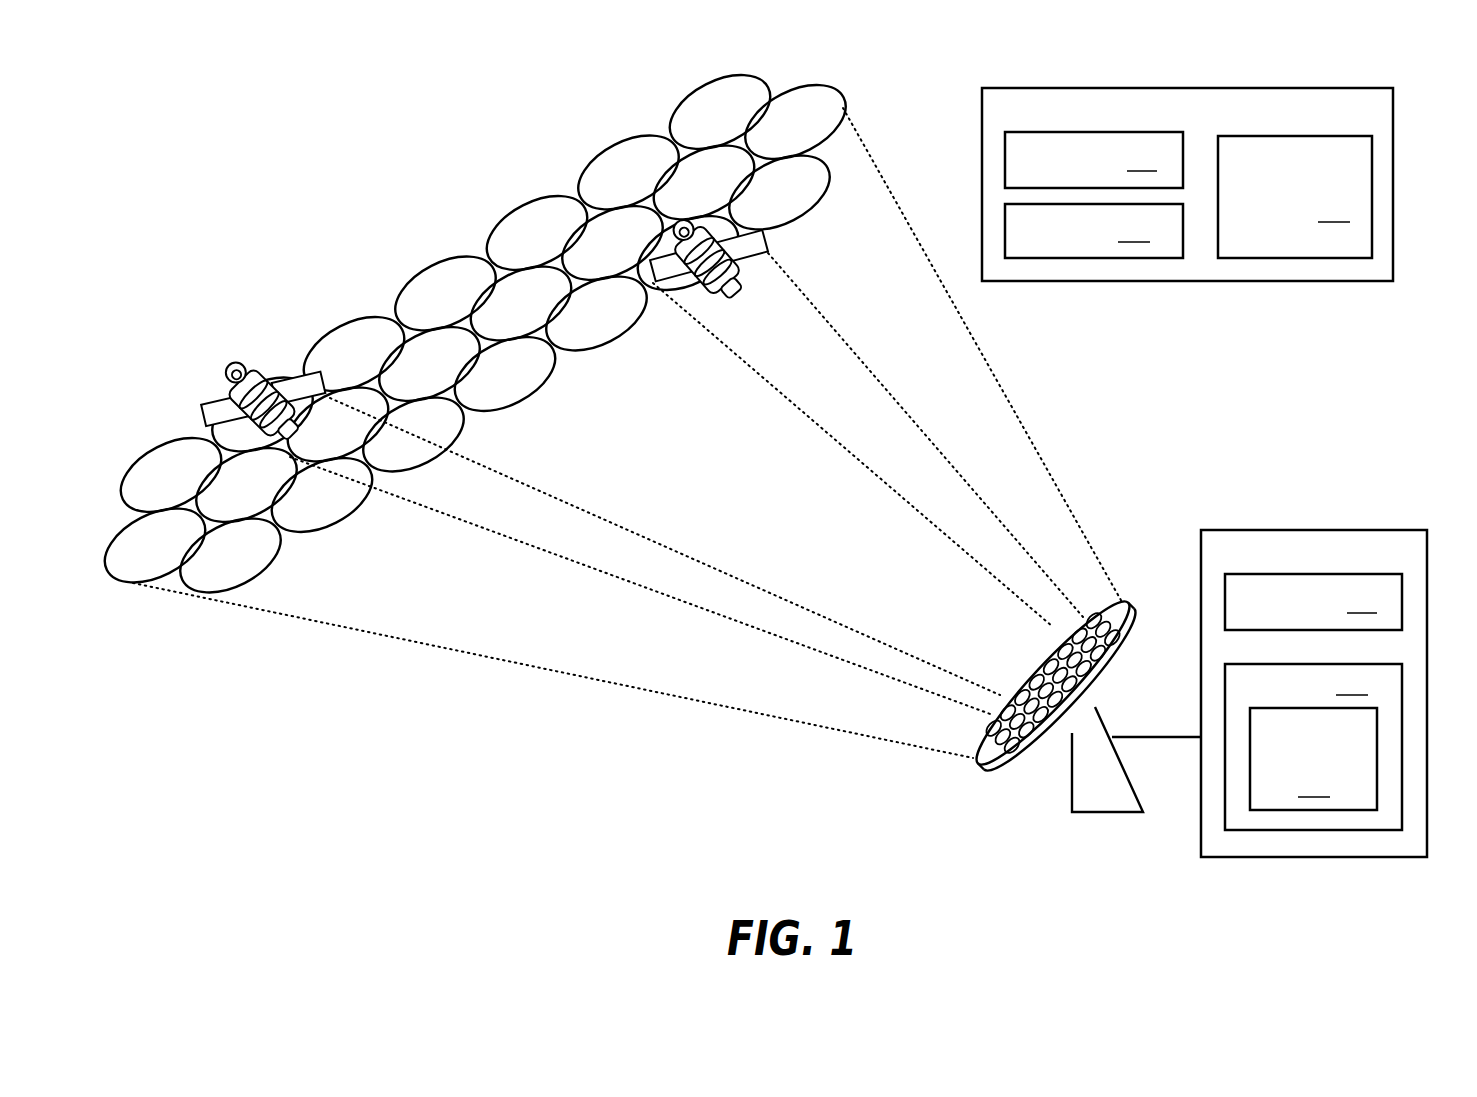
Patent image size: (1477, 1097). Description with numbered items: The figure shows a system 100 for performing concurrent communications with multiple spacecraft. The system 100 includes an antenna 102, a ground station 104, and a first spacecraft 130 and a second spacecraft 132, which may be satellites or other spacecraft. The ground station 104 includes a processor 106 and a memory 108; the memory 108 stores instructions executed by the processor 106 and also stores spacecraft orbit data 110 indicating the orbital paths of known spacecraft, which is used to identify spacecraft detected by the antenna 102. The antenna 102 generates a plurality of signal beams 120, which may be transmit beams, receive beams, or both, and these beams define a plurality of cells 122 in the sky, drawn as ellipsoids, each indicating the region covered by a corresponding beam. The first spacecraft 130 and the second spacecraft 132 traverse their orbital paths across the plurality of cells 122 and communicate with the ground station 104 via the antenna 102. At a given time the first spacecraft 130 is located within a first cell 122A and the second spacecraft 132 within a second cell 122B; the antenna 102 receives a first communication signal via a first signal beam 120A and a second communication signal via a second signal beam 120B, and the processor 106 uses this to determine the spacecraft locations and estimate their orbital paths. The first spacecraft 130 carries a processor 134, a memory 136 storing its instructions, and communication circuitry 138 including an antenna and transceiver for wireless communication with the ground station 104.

The system 100 is at (158, 154).
The antenna 102 is at (1127, 600).
The ground station 104 is at (1342, 530).
The processor 106 is at (1313, 602).
The memory 108 is at (1313, 747).
The spacecraft orbit data 110 is at (1313, 759).
The plurality of signal beams 120 is at (1068, 412).
The first signal beam 120A is at (862, 465).
The second signal beam 120B is at (588, 510).
The plurality of cells 122 is at (434, 222).
The first cell 122A is at (669, 310).
The second cell 122B is at (277, 355).
The first spacecraft 130 is at (771, 242).
The second spacecraft 132 is at (214, 400).
The processor 134 is at (1094, 160).
The memory 136 is at (1094, 231).
The communication circuitry 138 is at (1295, 197).